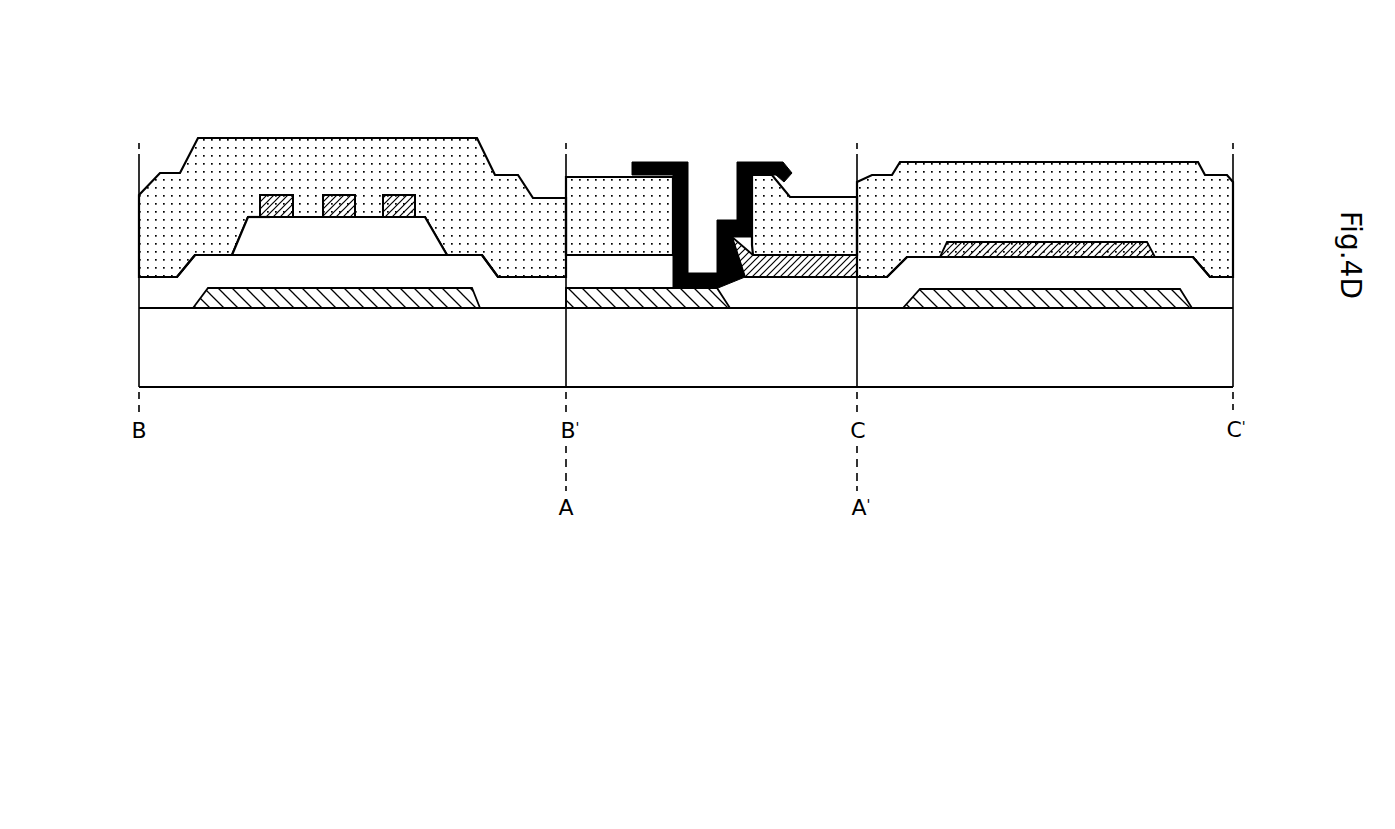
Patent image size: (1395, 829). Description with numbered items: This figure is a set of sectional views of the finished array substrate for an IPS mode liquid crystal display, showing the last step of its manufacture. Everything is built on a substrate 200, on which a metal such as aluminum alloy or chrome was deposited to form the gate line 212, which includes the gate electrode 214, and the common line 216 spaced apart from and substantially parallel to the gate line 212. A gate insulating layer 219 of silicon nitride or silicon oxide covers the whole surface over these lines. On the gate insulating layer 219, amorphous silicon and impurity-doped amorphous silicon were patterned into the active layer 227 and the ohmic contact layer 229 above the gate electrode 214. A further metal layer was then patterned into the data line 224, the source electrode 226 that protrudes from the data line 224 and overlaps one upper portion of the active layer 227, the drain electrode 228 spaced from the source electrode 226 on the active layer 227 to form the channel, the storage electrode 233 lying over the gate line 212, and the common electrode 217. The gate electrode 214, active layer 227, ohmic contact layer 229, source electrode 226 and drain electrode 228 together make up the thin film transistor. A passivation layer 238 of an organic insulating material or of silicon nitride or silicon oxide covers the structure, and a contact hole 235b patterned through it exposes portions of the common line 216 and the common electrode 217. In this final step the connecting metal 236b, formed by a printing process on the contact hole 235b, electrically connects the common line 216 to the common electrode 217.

The substrate 200 is at (330, 362).
The gate line 212 is at (1058, 303).
The gate electrode 214 is at (420, 310).
The common line 216 is at (627, 300).
The common electrode 217 is at (798, 278).
The gate insulating layer 219 is at (150, 293).
The data line 224 is at (273, 194).
The source electrode 226 is at (397, 194).
The active layer 227 is at (242, 235).
The drain electrode 228 is at (335, 194).
The ohmic contact layer 229 is at (271, 215).
The storage electrode 233 is at (1031, 242).
The contact hole 235b is at (702, 180).
The connecting metal 236b is at (655, 162).
The passivation layer 238 is at (449, 155).